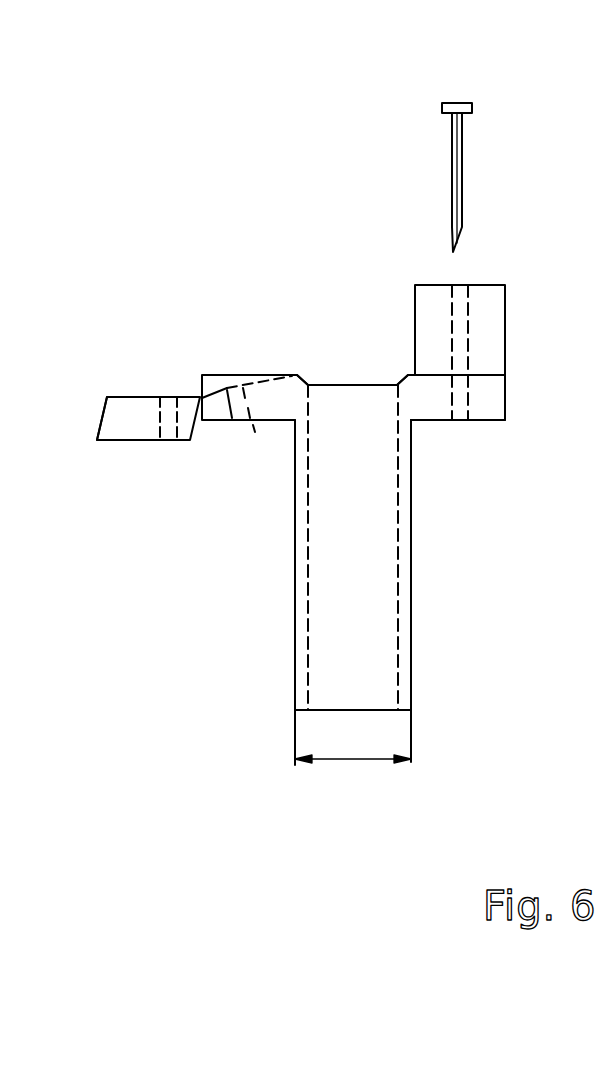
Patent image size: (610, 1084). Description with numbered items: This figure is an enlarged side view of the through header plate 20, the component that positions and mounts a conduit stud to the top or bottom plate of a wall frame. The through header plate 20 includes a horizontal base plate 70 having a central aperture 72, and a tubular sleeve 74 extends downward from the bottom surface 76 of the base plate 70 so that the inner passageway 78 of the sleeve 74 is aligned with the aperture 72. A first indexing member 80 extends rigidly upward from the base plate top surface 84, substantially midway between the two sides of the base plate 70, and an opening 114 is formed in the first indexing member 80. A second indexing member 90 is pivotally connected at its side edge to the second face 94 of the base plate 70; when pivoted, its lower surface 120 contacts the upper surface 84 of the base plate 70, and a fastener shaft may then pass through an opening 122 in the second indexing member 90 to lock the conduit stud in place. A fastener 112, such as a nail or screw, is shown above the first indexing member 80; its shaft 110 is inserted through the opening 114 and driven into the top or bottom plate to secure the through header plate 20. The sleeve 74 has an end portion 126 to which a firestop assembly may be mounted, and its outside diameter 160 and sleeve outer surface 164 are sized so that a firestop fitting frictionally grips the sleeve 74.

The through header plate 20 is at (540, 215).
The horizontal base plate 70 is at (490, 422).
The central aperture 72 is at (355, 384).
The tubular sleeve 74 is at (412, 598).
The bottom surface 76 is at (432, 421).
The inner passageway 78 is at (366, 578).
The first indexing member 80 is at (505, 329).
The base plate top surface 84 is at (257, 372).
The second indexing member 90 is at (110, 443).
The second face 94 is at (198, 392).
The shaft 110 is at (450, 166).
The fastener 112 is at (473, 105).
The opening 114 is at (470, 309).
The lower surface 120 is at (127, 396).
The opening 122 is at (170, 450).
The end portion 126 is at (293, 686).
The outside diameter 160 is at (343, 761).
The sleeve outer surface 164 is at (412, 646).